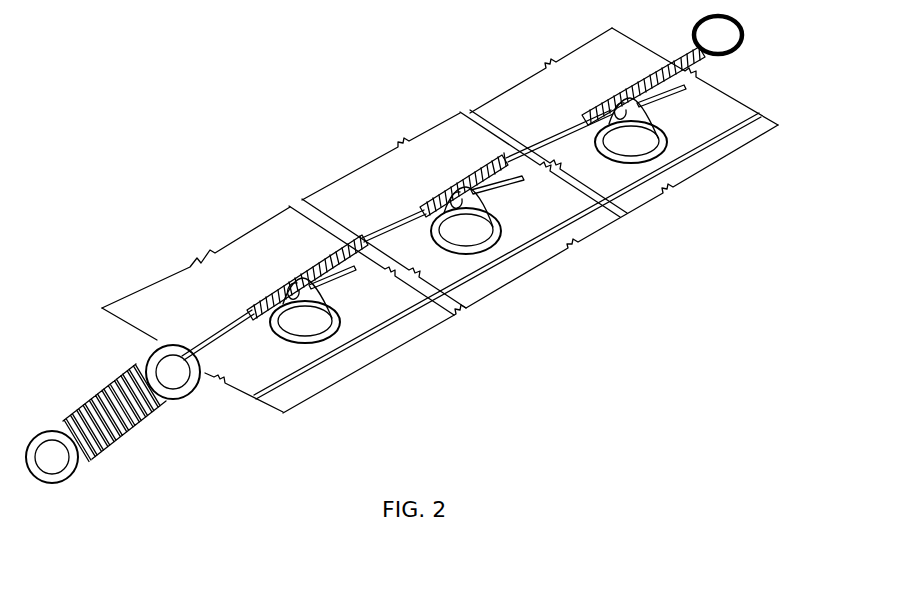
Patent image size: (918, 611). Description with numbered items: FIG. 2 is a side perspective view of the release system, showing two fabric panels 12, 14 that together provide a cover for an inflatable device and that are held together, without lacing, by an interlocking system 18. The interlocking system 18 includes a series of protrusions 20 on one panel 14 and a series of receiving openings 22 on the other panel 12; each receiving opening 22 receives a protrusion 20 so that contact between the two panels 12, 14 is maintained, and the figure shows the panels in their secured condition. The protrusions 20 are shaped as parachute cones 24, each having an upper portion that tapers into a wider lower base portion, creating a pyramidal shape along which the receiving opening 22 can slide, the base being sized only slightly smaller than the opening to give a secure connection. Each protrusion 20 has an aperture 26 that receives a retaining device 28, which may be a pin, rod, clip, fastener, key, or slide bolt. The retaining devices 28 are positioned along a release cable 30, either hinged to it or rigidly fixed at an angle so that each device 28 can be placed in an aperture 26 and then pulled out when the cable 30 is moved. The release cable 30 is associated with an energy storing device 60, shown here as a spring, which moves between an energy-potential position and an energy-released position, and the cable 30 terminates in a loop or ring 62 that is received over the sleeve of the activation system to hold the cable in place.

The panel 12 is at (390, 182).
The panel 14 is at (318, 377).
The interlocking system 18 is at (100, 87).
The protrusion 20 is at (336, 345).
The receiving opening 22 is at (311, 304).
The parachute cone 24 is at (632, 133).
The aperture 26 is at (455, 200).
The retaining device 28 is at (337, 284).
The release cable 30 is at (273, 280).
The energy storing device 60 is at (137, 433).
The ring 62 is at (737, 57).